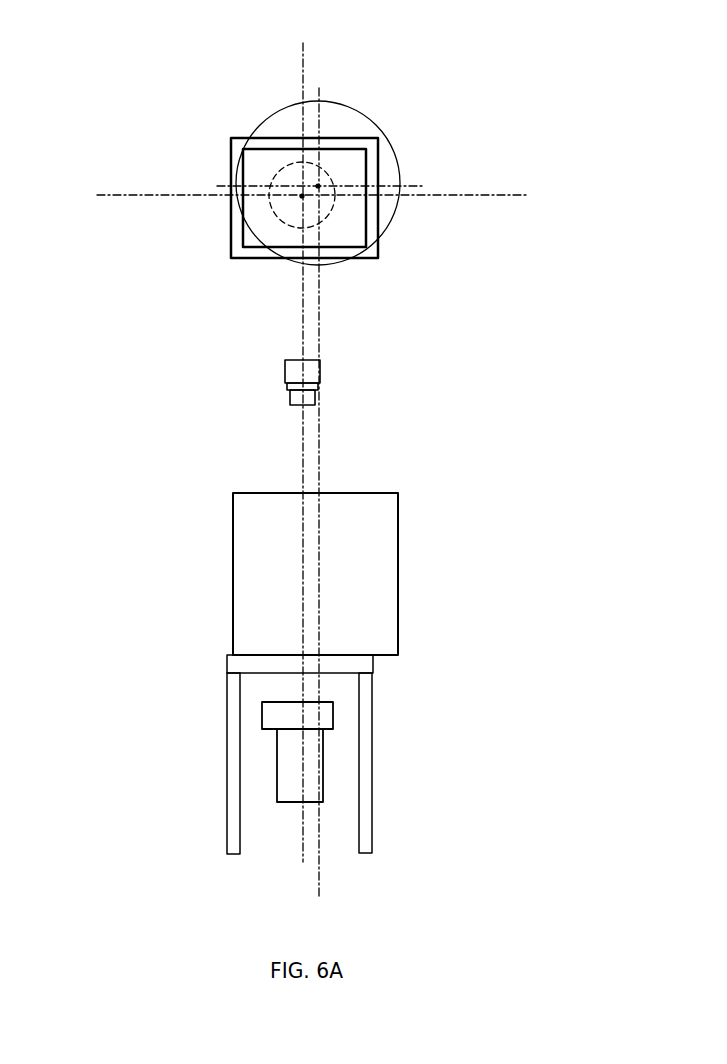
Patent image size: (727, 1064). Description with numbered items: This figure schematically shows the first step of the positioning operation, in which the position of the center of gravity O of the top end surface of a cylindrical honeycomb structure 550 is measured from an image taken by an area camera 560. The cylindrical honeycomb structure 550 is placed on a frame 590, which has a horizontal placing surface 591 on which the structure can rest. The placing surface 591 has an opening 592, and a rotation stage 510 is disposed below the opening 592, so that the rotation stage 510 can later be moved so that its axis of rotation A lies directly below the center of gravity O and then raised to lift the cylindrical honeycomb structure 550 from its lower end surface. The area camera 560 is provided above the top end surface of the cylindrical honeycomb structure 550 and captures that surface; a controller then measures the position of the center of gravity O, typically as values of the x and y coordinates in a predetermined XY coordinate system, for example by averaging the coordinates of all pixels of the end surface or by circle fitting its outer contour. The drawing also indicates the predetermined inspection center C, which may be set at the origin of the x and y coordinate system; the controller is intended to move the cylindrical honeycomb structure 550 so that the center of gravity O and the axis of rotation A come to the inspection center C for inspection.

The rotation stage 510 is at (262, 713).
The cylindrical honeycomb structure 550 is at (395, 157).
The area camera 560 is at (285, 378).
The frame 590 is at (380, 261).
The placing surface 591 is at (238, 240).
The opening 592 is at (237, 204).
The center of gravity of the first end surface O is at (318, 186).
The inspection center C is at (302, 196).
The axis of rotation A is at (298, 883).
The x coordinate x is at (325, 194).
The y coordinate y is at (303, 431).